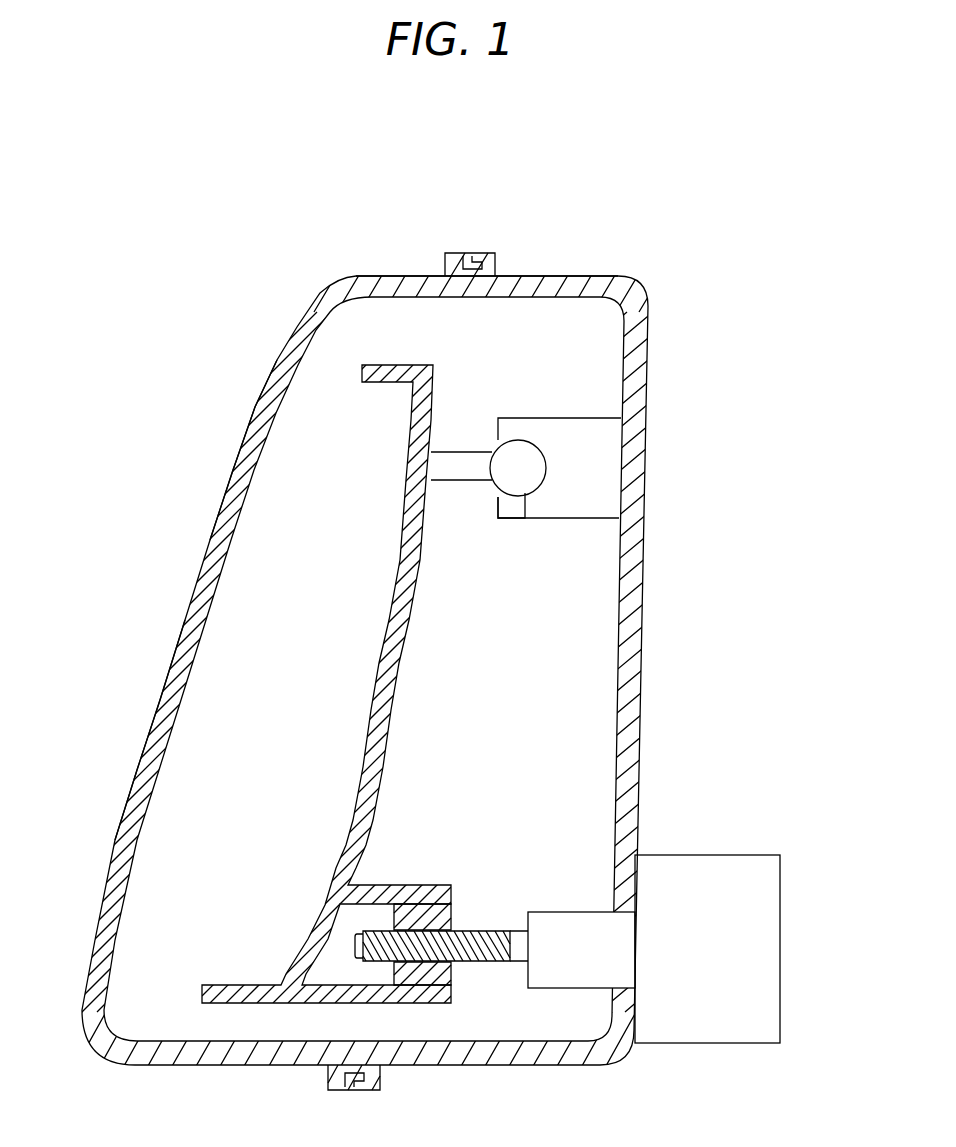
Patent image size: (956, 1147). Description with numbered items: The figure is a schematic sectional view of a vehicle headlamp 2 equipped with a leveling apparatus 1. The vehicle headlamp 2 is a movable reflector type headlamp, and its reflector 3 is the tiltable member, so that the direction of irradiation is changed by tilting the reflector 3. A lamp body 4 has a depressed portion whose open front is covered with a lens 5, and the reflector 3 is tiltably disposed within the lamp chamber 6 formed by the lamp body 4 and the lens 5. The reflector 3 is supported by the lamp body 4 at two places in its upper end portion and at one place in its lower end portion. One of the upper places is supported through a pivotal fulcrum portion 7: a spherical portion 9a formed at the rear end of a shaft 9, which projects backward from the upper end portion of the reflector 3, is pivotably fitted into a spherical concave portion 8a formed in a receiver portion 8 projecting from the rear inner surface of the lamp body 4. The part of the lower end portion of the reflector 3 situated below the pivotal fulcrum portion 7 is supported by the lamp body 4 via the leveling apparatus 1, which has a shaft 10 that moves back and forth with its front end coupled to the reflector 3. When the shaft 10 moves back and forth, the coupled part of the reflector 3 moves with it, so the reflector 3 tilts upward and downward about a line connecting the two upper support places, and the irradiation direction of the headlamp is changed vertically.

The leveling apparatus 1 is at (745, 853).
The vehicle headlamp 2 is at (597, 215).
The reflector 3 is at (402, 670).
The lamp body 4 is at (633, 576).
The lens 5 is at (217, 520).
The lamp chamber 6 is at (197, 722).
The pivotal fulcrum portion 7 is at (587, 387).
The receiver portion 8 is at (590, 513).
The spherical concave portion 8a is at (518, 492).
The shaft 9 is at (458, 455).
The spherical portion 9a is at (533, 462).
The shaft 10 is at (497, 931).